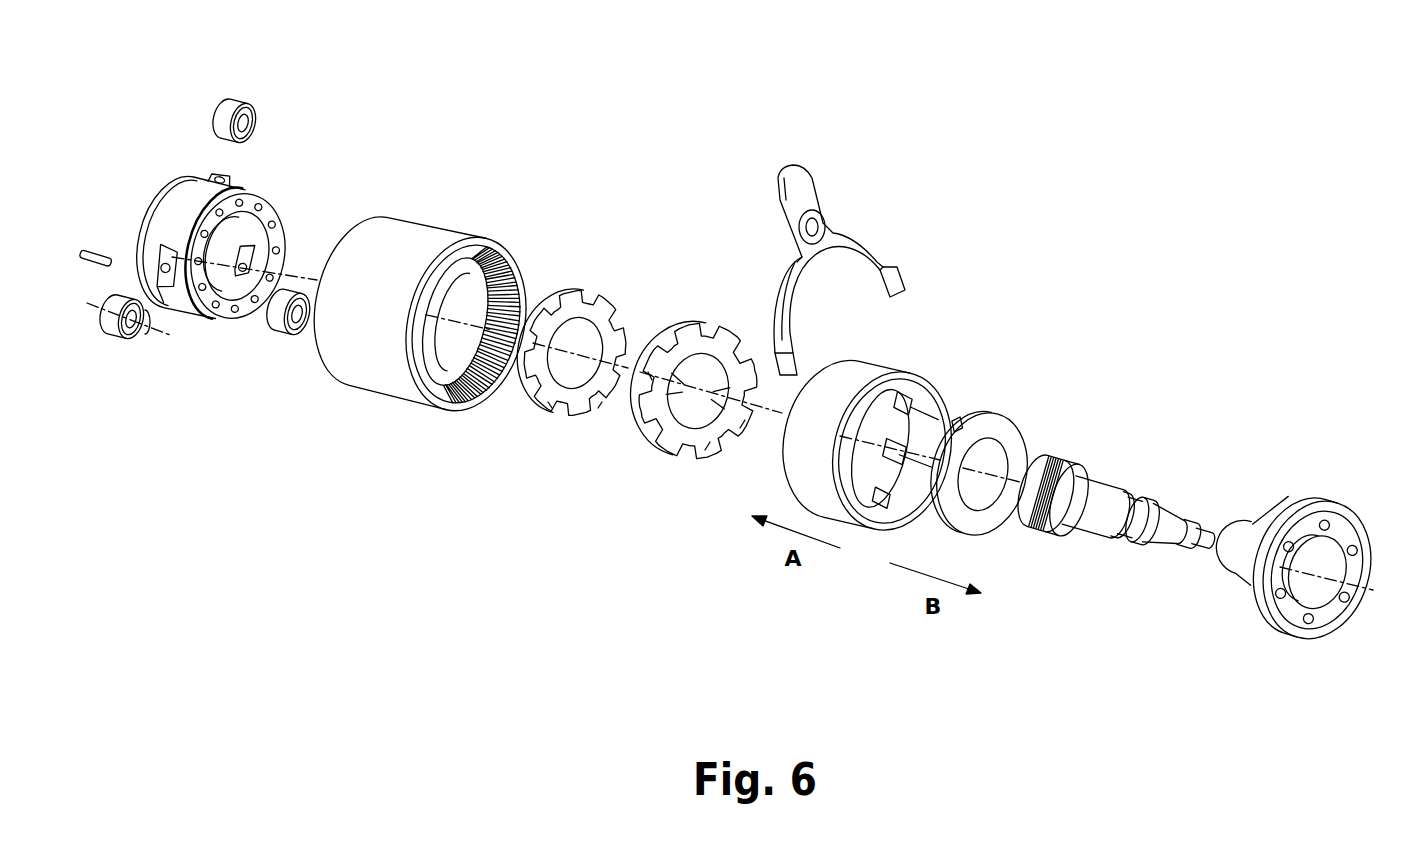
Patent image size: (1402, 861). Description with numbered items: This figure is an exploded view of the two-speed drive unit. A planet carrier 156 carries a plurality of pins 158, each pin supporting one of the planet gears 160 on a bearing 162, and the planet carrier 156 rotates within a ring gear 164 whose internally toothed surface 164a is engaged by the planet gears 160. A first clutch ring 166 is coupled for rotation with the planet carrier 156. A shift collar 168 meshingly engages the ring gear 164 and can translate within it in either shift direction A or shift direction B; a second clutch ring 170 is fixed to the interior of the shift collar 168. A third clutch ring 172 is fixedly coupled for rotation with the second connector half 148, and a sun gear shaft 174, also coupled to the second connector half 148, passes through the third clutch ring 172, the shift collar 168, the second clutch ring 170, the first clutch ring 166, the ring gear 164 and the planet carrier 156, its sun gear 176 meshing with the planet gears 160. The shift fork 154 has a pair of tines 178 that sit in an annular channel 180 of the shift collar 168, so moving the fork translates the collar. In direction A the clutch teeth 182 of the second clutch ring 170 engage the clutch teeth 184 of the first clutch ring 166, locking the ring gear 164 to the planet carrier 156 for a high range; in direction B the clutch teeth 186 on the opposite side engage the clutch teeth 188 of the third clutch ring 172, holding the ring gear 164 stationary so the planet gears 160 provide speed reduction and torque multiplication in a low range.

The second connector half 148 is at (1273, 522).
The shift fork 154 is at (827, 212).
The planet carrier 156 is at (185, 212).
The pins 158 is at (85, 262).
The planet gears 160 is at (242, 100).
The bearing 162 is at (140, 333).
The ring gear 164 is at (443, 237).
The internally toothed surface 164a is at (483, 390).
The first clutch ring 166 is at (588, 297).
The shift collar 168 is at (938, 380).
The second clutch ring 170 is at (678, 330).
The third clutch ring 172 is at (1020, 440).
The sun gear shaft 174 is at (1107, 493).
The sun gear 176 is at (1058, 455).
The tines 178 is at (898, 277).
The annular channel 180 is at (880, 380).
The clutch teeth 182 is at (633, 487).
The clutch teeth 184 is at (575, 452).
The clutch teeth 186 is at (685, 522).
The clutch teeth 188 is at (965, 423).